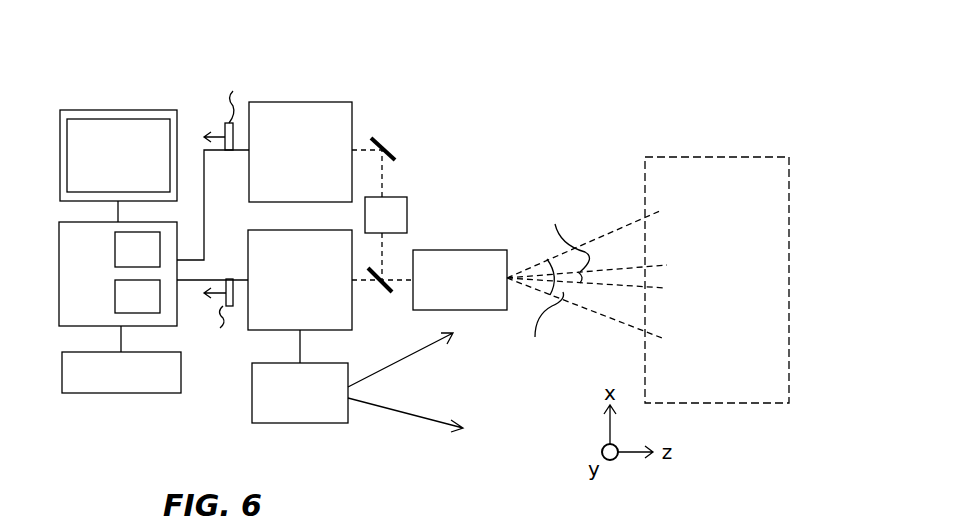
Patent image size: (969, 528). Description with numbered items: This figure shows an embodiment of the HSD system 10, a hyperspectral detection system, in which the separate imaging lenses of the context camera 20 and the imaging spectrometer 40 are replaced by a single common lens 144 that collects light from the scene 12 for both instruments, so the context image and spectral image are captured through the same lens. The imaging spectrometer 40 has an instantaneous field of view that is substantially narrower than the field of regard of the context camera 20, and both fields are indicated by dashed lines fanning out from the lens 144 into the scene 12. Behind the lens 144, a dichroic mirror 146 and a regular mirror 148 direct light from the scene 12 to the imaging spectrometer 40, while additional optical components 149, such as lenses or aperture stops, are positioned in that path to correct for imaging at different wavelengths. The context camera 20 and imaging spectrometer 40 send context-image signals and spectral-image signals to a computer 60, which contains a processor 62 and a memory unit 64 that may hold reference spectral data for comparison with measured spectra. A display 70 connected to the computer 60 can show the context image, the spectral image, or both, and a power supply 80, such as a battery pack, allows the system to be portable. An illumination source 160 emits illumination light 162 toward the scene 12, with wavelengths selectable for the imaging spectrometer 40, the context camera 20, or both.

The HSD system 10 is at (150, 76).
The scene 12 is at (718, 157).
The context camera 20 is at (287, 292).
The imaging spectrometer 40 is at (287, 164).
The computer 60 is at (73, 290).
The processor 62 is at (125, 308).
The memory unit 64 is at (125, 261).
The display 70 is at (104, 169).
The power supply 80 is at (109, 384).
The lens 144 is at (475, 292).
The dichroic mirror 146 is at (376, 285).
The regular mirror 148 is at (374, 136).
The additional optical components 149 is at (408, 212).
The illumination source 160 is at (319, 409).
The illumination light 162 is at (423, 430).